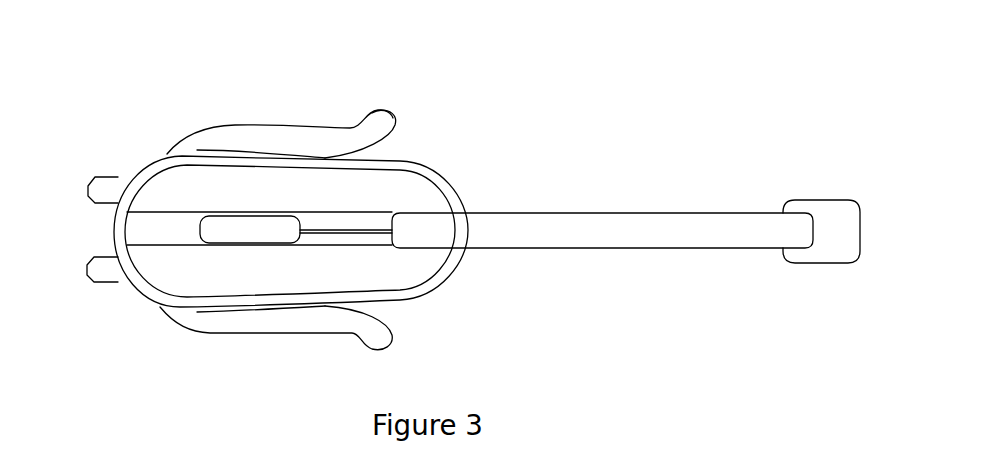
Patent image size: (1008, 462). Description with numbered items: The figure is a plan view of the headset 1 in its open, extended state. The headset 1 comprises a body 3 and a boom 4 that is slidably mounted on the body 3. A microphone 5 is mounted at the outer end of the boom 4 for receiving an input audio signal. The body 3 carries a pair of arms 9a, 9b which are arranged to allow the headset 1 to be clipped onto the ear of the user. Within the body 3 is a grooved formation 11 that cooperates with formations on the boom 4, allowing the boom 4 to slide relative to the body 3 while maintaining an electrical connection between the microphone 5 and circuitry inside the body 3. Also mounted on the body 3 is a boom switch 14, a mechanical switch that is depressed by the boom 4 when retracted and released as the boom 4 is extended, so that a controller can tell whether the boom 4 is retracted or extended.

The headset 1 is at (826, 89).
The body 3 is at (457, 187).
The boom 4 is at (682, 202).
The microphone 5 is at (817, 198).
The arm 9a is at (200, 335).
The arm 9b is at (177, 128).
The grooved formation 11 is at (363, 220).
The boom switch 14 is at (203, 226).